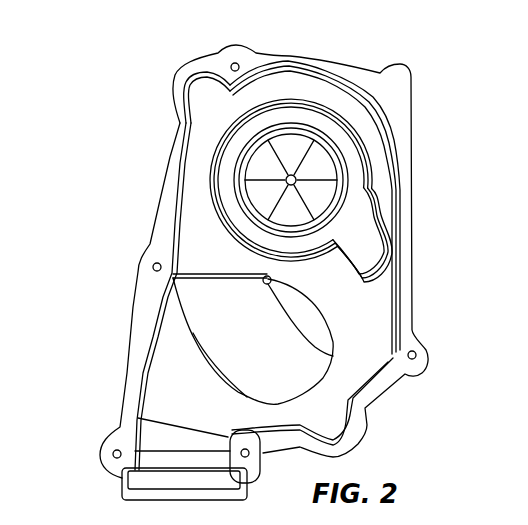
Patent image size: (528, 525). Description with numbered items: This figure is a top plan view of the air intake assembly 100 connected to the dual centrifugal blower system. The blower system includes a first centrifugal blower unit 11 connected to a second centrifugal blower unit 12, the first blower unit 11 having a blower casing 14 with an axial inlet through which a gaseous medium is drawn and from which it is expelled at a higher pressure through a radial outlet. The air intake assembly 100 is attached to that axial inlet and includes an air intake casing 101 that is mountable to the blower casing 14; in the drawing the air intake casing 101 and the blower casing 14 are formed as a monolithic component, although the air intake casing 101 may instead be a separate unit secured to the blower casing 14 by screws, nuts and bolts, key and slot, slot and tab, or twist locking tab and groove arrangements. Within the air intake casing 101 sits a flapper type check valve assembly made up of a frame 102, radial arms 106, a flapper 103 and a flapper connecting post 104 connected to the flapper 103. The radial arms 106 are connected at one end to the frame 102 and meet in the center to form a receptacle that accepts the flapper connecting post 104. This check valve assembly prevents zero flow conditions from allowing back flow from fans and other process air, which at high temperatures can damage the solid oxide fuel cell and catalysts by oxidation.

The air intake assembly 100 is at (186, 150).
The first centrifugal blower unit 11 is at (184, 172).
The second centrifugal blower unit 12 is at (376, 320).
The blower casing 14 is at (368, 246).
The air intake casing 101 is at (352, 163).
The frame 102 is at (340, 188).
The flapper 103 is at (342, 140).
The flapper connecting post 104 is at (300, 186).
The radial arms 106 is at (322, 155).